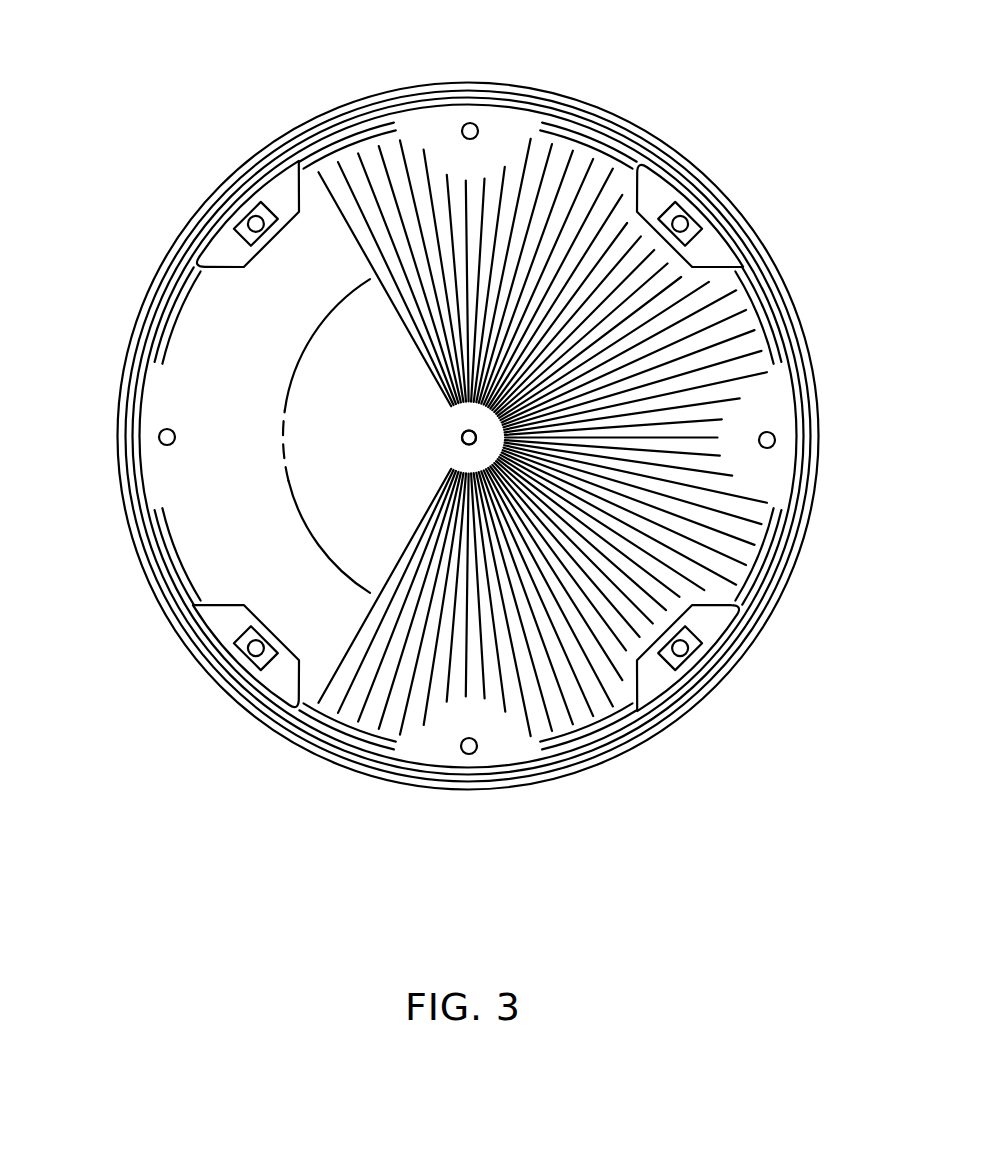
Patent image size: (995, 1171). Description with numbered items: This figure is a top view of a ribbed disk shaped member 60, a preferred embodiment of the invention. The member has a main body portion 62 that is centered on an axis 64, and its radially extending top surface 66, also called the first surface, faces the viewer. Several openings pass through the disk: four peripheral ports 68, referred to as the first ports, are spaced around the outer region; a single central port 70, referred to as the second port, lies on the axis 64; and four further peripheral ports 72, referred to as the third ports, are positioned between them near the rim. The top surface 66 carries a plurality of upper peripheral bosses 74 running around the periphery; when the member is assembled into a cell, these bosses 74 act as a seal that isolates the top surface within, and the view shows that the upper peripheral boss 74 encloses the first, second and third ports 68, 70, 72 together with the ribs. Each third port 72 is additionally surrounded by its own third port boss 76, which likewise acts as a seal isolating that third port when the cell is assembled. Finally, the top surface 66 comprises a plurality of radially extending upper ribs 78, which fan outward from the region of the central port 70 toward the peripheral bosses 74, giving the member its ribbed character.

The ribbed disk shaped member 60 is at (640, 68).
The main body portion 62 is at (507, 82).
The axis 64 is at (463, 432).
The radially extending top surface 66 is at (255, 536).
The peripheral ports 68 is at (462, 128).
The central port 70 is at (463, 443).
The peripheral ports 72 is at (246, 237).
The upper peripheral bosses 74 is at (155, 338).
The third port boss 76 is at (293, 182).
The upper ribs 78 is at (430, 312).